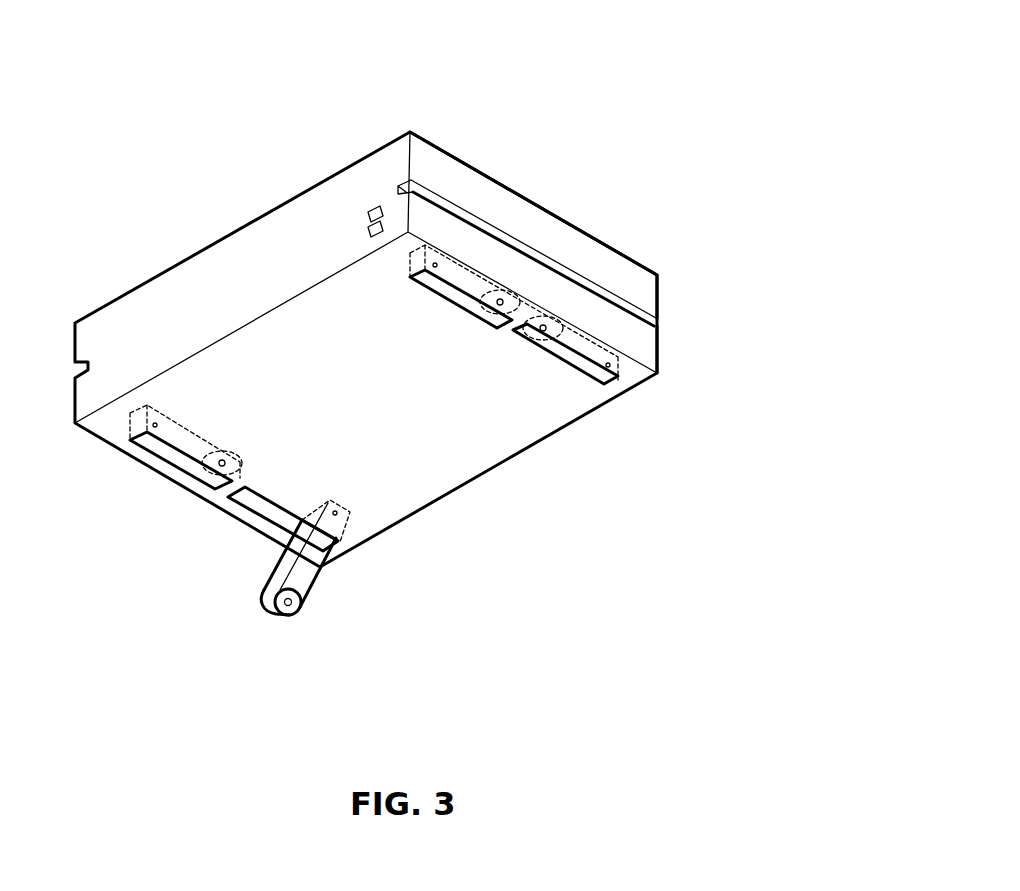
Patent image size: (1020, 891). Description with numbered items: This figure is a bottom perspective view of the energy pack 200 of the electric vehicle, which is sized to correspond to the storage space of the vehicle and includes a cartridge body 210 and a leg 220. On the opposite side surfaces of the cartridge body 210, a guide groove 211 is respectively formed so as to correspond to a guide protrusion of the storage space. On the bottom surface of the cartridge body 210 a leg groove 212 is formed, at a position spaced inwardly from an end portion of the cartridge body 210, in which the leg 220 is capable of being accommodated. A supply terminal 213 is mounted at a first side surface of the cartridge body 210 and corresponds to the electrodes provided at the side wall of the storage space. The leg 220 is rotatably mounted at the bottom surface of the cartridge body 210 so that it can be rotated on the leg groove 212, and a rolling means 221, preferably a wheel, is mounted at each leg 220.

The energy pack 200 is at (528, 172).
The cartridge body 210 is at (615, 266).
The guide groove 211 is at (603, 293).
The leg groove 212 is at (262, 510).
The supply terminal 213 is at (369, 207).
The leg 220 is at (307, 577).
The rolling means 221 is at (282, 616).